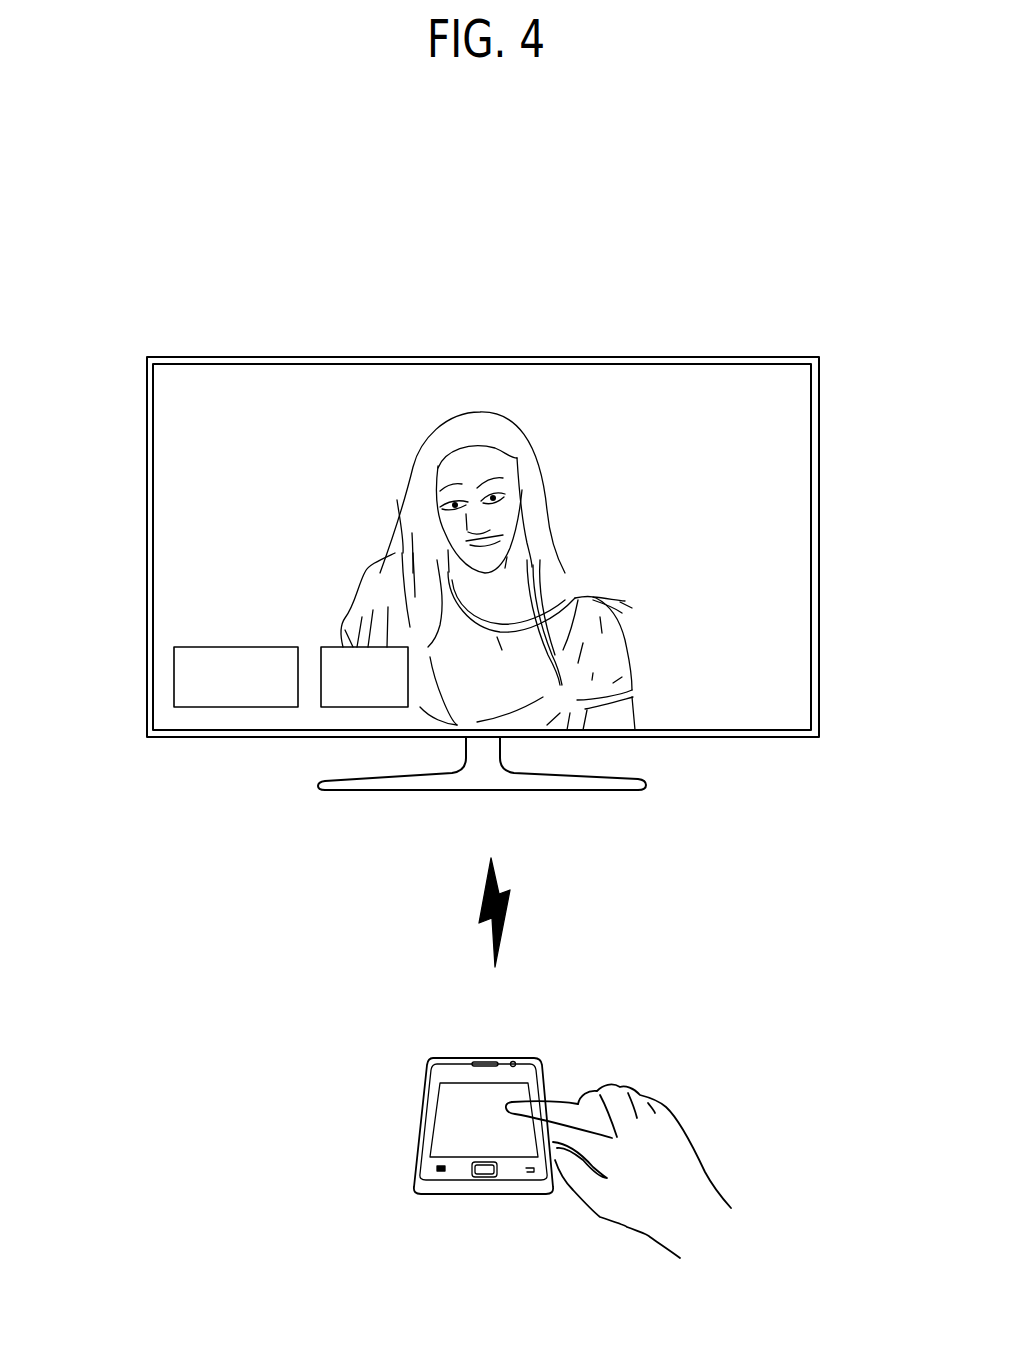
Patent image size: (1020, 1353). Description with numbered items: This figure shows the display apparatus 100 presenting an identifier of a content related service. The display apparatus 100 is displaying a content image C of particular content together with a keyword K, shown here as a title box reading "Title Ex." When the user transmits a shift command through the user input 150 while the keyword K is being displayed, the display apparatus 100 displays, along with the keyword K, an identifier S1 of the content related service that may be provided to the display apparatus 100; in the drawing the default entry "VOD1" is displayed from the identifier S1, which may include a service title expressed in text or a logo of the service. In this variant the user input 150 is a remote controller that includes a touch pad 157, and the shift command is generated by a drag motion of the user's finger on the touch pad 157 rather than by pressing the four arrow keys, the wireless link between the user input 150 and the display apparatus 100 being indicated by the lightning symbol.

The display apparatus 100 is at (622, 332).
The content image C is at (351, 542).
The keyword K is at (198, 707).
The identifier of content related service S1 is at (330, 708).
The user input 150 is at (380, 1126).
The touch pad 157 is at (458, 1093).